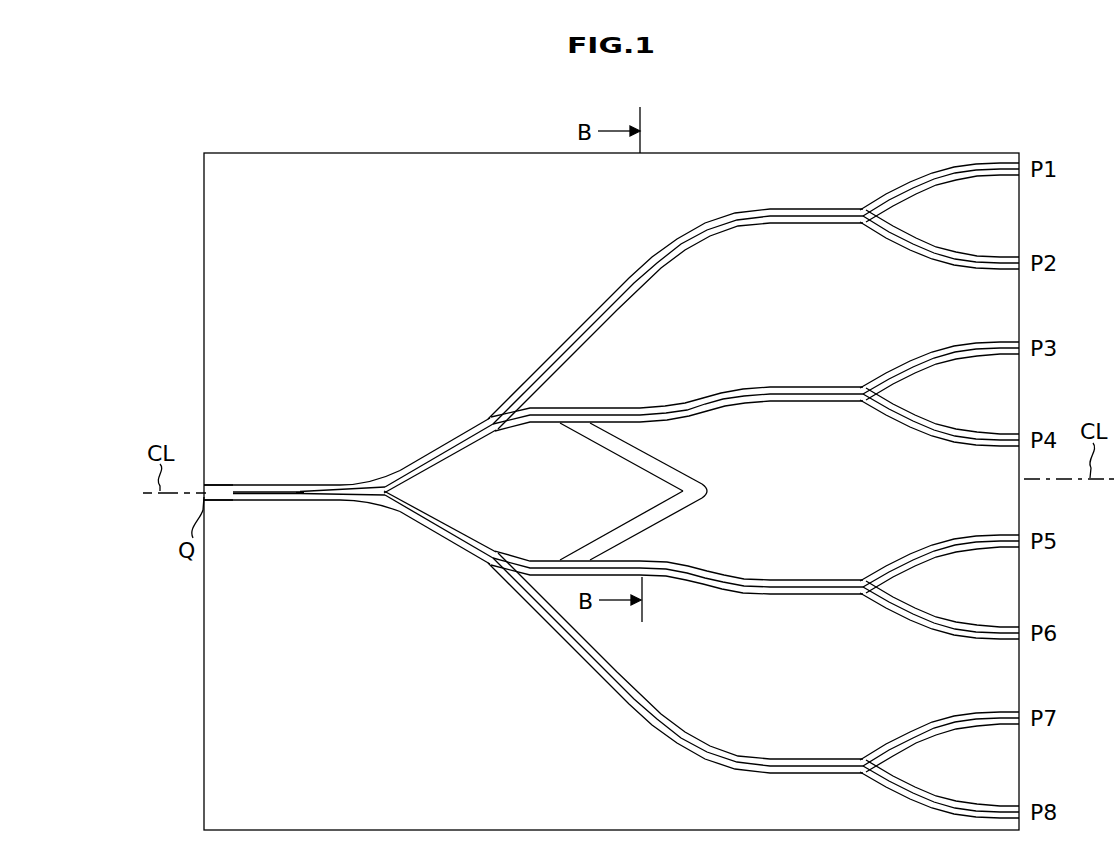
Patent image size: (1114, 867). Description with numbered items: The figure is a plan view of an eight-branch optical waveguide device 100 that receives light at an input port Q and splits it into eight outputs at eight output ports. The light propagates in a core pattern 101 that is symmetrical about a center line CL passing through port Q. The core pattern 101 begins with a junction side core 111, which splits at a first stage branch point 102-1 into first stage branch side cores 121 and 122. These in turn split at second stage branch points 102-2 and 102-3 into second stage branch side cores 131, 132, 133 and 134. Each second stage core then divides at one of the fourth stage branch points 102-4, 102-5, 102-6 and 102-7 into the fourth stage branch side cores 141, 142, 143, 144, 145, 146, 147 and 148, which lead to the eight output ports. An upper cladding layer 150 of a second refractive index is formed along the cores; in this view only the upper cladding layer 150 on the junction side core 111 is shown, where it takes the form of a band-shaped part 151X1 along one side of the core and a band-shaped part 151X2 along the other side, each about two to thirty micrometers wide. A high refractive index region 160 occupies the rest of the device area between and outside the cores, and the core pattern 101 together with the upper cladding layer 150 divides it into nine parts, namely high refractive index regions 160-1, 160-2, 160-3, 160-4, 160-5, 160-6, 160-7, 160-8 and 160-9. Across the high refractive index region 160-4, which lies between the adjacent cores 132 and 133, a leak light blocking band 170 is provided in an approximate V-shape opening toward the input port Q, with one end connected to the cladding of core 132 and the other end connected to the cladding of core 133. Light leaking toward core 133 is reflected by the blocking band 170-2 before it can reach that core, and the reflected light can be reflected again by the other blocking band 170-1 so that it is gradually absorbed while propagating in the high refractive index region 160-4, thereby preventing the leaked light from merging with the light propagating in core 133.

The 8-branch optical waveguide device 100 is at (929, 74).
The core pattern 101 is at (297, 470).
The first stage branch point 102-1 is at (302, 491).
The second stage branch point 102-2 is at (492, 418).
The second stage branch point 102-3 is at (492, 566).
The fourth stage branch point 102-4 is at (858, 211).
The fourth stage branch point 102-5 is at (860, 388).
The fourth stage branch point 102-6 is at (858, 581).
The fourth stage branch point 102-7 is at (858, 760).
The junction side core 111 is at (236, 485).
The first stage branch side core 121 is at (420, 459).
The first stage branch side core 122 is at (430, 530).
The second stage branch side core 131 is at (610, 296).
The second stage branch side core 132 is at (742, 390).
The second stage branch side core 133 is at (790, 580).
The second stage branch side core 134 is at (630, 695).
The fourth stage branch side core 141 is at (985, 163).
The fourth stage branch side core 142 is at (949, 254).
The fourth stage branch side core 143 is at (993, 342).
The fourth stage branch side core 144 is at (949, 432).
The fourth stage branch side core 145 is at (993, 535).
The fourth stage branch side core 146 is at (951, 628).
The fourth stage branch side core 147 is at (993, 712).
The fourth stage branch side core 148 is at (956, 819).
The upper cladding layer 150 is at (240, 503).
The band-shaped part 151X1 is at (264, 500).
The band-shaped part 151X2 is at (283, 486).
The high refractive index region 160 is at (216, 706).
The high refractive index region 160-1 is at (417, 257).
The high refractive index region 160-2 is at (417, 752).
The high refractive index region 160-3 is at (827, 307).
The high refractive index region 160-4 is at (567, 498).
The high refractive index region 160-5 is at (790, 673).
The high refractive index region 160-6 is at (1007, 228).
The high refractive index region 160-7 is at (1004, 407).
The high refractive index region 160-8 is at (1007, 599).
The high refractive index region 160-9 is at (1007, 774).
The leak light blocking band 170 is at (688, 463).
The blocking band 170-1 is at (641, 451).
The blocking band 170-2 is at (655, 525).